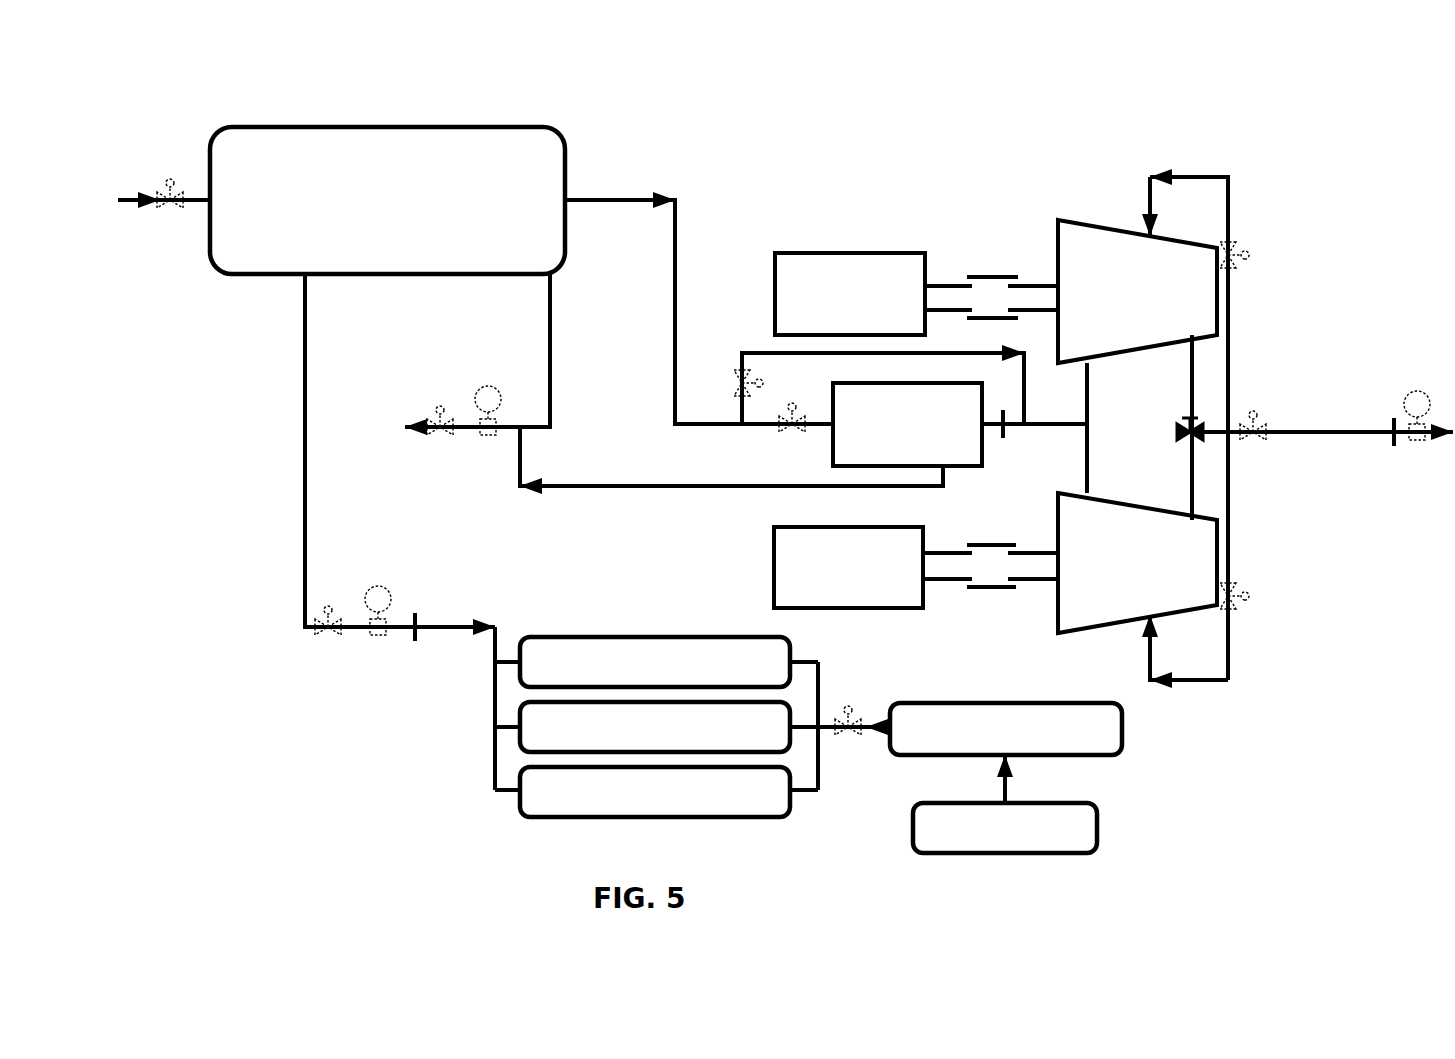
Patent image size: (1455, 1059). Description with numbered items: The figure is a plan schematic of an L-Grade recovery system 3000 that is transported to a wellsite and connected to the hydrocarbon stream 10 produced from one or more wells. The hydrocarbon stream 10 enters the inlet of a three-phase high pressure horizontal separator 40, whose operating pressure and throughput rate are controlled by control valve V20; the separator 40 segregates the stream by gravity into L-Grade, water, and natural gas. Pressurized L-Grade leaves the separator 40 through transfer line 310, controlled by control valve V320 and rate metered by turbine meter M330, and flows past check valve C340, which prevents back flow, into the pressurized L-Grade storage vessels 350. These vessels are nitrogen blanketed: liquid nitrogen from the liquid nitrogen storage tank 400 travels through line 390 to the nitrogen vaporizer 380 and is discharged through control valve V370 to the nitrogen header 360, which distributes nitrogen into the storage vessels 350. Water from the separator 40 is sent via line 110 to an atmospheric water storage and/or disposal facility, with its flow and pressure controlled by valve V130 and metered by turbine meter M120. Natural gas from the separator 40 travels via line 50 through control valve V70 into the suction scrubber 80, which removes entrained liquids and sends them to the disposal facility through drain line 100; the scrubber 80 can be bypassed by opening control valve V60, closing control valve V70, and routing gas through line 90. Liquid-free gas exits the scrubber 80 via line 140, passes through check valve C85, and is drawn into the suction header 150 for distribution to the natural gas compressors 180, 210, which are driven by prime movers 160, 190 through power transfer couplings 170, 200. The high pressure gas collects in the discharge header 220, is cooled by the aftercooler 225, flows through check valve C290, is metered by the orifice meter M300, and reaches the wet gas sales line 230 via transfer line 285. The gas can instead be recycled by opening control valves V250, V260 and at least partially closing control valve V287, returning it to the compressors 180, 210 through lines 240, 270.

The L-Grade recovery system 3000 is at (620, 76).
The hydrocarbon stream 10 is at (150, 197).
The control valve V20 is at (175, 212).
The three-phase high pressure horizontal separator 40 is at (475, 126).
The line 50 is at (588, 200).
The transfer line 310 is at (305, 322).
The line 110 is at (552, 410).
The valve V130 is at (442, 438).
The turbine meter M120 is at (492, 438).
The drain line 100 is at (648, 488).
The line 90 is at (1025, 407).
The control valve V60 is at (738, 372).
The control valve V70 is at (795, 410).
The suction scrubber 80 is at (982, 446).
The check valve C85 is at (1005, 428).
The line 140 is at (1082, 428).
The prime mover 160 is at (825, 253).
The power transfer coupling 170 is at (978, 277).
The natural gas compressor 180 is at (1100, 228).
The suction header 150 is at (1090, 452).
The discharge header 220 is at (1190, 397).
The aftercooler 225 is at (1180, 440).
The prime mover 190 is at (775, 535).
The power transfer coupling 200 is at (1000, 588).
The natural gas compressor 210 is at (1110, 632).
The line 240 is at (1233, 348).
The control valve V250 is at (1250, 258).
The line 270 is at (1205, 682).
The control valve V260 is at (1250, 598).
The transfer line 285 is at (1330, 434).
The control valve V287 is at (1265, 436).
The check valve C290 is at (1393, 440).
The orifice meter M300 is at (1422, 438).
The wet gas sales line 230 is at (1450, 440).
The control valve V320 is at (333, 598).
The turbine meter M330 is at (388, 592).
The check valve C340 is at (418, 618).
The pressurized L-Grade storage vessels 350 is at (770, 638).
The nitrogen header 360 is at (822, 674).
The control valve V370 is at (852, 710).
The nitrogen vaporizer 380 is at (925, 703).
The line 390 is at (1007, 790).
The liquid nitrogen storage tank 400 is at (992, 853).